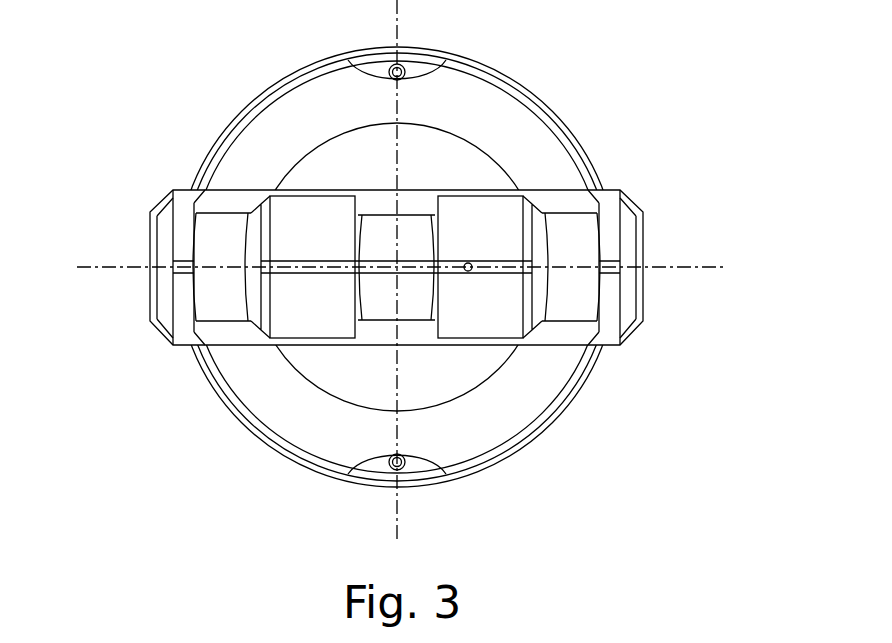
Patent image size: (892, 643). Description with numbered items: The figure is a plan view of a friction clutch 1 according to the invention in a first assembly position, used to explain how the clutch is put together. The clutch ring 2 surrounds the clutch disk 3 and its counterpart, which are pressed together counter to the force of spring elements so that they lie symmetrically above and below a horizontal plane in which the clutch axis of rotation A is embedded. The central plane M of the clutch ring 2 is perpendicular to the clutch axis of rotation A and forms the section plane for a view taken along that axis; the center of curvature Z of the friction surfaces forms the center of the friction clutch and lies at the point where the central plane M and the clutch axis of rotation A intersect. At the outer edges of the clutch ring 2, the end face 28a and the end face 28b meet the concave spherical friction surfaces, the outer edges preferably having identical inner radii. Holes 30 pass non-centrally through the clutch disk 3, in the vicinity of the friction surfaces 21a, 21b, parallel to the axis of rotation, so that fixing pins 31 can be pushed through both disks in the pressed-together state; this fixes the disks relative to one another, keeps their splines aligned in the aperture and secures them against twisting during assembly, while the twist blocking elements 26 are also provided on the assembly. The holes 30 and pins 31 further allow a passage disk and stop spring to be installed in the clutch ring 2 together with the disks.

The friction clutch 1 is at (150, 97).
The clutch ring 2 is at (388, 282).
The clutch disk 3 is at (389, 259).
The friction surface 21a is at (524, 84).
The friction surface 21b is at (270, 447).
The twist blocking elements 26 is at (167, 308).
The end face 28a is at (315, 189).
The end face 28b is at (420, 346).
The hole 30 is at (358, 76).
The fixing pin 31 is at (405, 67).
The central plane M is at (93, 267).
The center of curvature Z is at (418, 266).
The clutch axis of rotation A is at (397, 518).